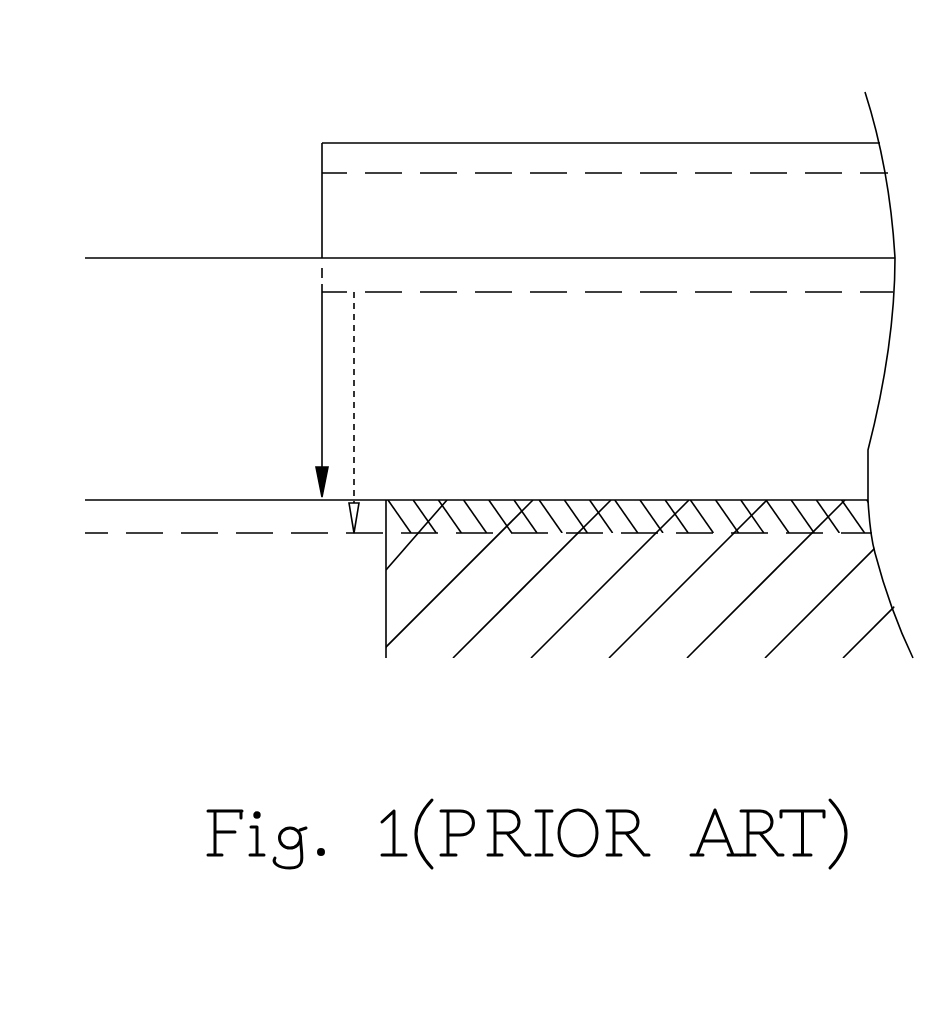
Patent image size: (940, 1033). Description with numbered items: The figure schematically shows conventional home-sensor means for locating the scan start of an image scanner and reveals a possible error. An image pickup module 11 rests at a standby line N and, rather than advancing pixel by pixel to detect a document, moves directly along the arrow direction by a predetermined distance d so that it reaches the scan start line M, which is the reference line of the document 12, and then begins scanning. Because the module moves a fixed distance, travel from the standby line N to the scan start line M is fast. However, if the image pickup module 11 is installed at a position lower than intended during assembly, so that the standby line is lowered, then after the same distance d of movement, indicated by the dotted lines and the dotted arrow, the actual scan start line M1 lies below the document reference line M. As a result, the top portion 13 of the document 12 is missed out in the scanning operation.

The image pickup module 11 is at (502, 200).
The document 12 is at (518, 552).
The top portion of the document 13 is at (718, 517).
The standby line N is at (205, 257).
The scan start line M is at (208, 500).
The actual scan start line M1 is at (288, 533).
The distance d is at (337, 400).